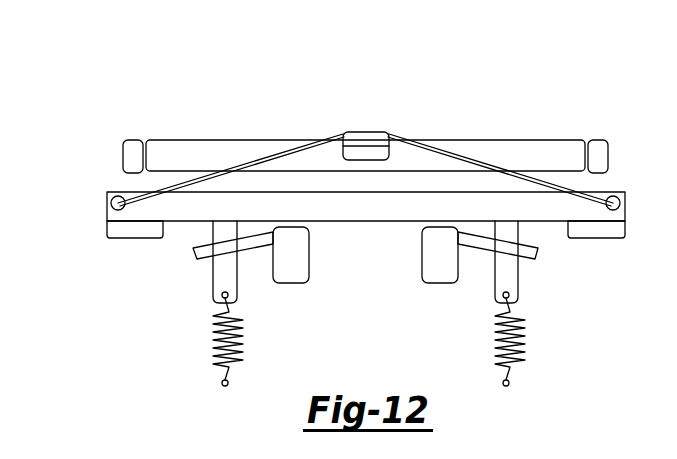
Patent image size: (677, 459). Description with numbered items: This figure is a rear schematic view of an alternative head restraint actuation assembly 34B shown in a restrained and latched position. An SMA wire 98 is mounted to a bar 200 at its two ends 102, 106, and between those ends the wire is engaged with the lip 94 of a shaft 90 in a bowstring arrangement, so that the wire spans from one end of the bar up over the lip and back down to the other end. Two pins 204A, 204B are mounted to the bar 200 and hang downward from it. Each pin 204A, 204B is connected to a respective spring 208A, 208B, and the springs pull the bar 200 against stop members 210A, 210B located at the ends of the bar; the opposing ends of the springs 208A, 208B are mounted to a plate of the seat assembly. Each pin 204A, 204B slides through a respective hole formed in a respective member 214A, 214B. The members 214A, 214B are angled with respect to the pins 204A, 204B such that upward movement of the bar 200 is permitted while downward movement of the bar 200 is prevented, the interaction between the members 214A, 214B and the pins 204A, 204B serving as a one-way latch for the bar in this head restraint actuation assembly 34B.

The head restraint actuation assembly 34B is at (467, 64).
The shaft 90 is at (187, 152).
The lip 94 is at (368, 131).
The SMA wire 98 is at (470, 157).
The end 102 is at (111, 203).
The end 106 is at (620, 203).
The bar 200 is at (365, 222).
The pin 204A is at (219, 272).
The pin 204B is at (512, 272).
The spring 208A is at (243, 350).
The spring 208B is at (525, 350).
The stop member 210A is at (135, 238).
The stop member 210B is at (595, 238).
The member 214A is at (245, 249).
The member 214B is at (488, 249).